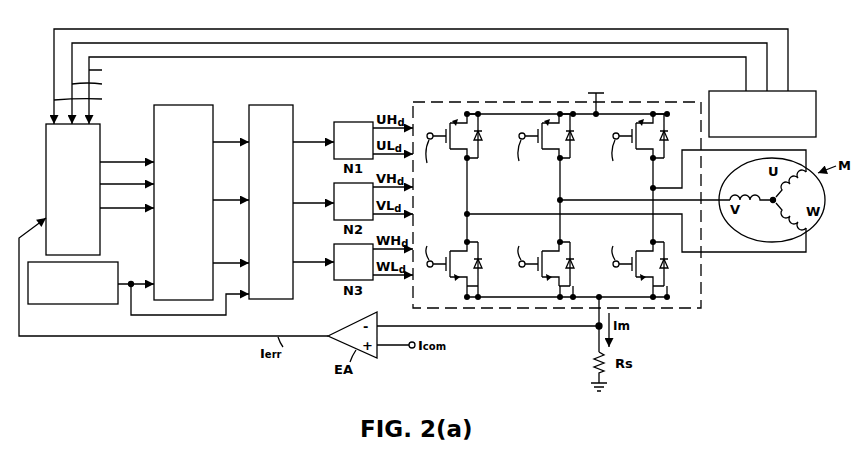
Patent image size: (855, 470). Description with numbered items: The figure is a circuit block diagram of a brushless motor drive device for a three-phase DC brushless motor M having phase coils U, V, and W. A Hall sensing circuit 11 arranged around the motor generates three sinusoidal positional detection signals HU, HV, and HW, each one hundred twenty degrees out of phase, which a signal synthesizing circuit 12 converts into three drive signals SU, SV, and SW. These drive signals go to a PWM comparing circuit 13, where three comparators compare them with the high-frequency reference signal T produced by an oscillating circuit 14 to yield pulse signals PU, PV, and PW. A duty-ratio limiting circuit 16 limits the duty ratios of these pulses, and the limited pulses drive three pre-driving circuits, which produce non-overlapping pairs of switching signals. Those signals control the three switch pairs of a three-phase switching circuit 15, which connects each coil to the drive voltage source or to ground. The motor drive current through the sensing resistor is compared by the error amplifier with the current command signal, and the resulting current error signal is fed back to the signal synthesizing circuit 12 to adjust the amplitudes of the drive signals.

The Hall sensing circuit 11 is at (817, 108).
The signal synthesizing circuit 12 is at (46, 128).
The PWM comparing circuit 13 is at (180, 105).
The oscillating circuit 14 is at (100, 304).
The three-phase switching circuit 15 is at (482, 102).
The duty-ratio limiting circuit 16 is at (270, 105).